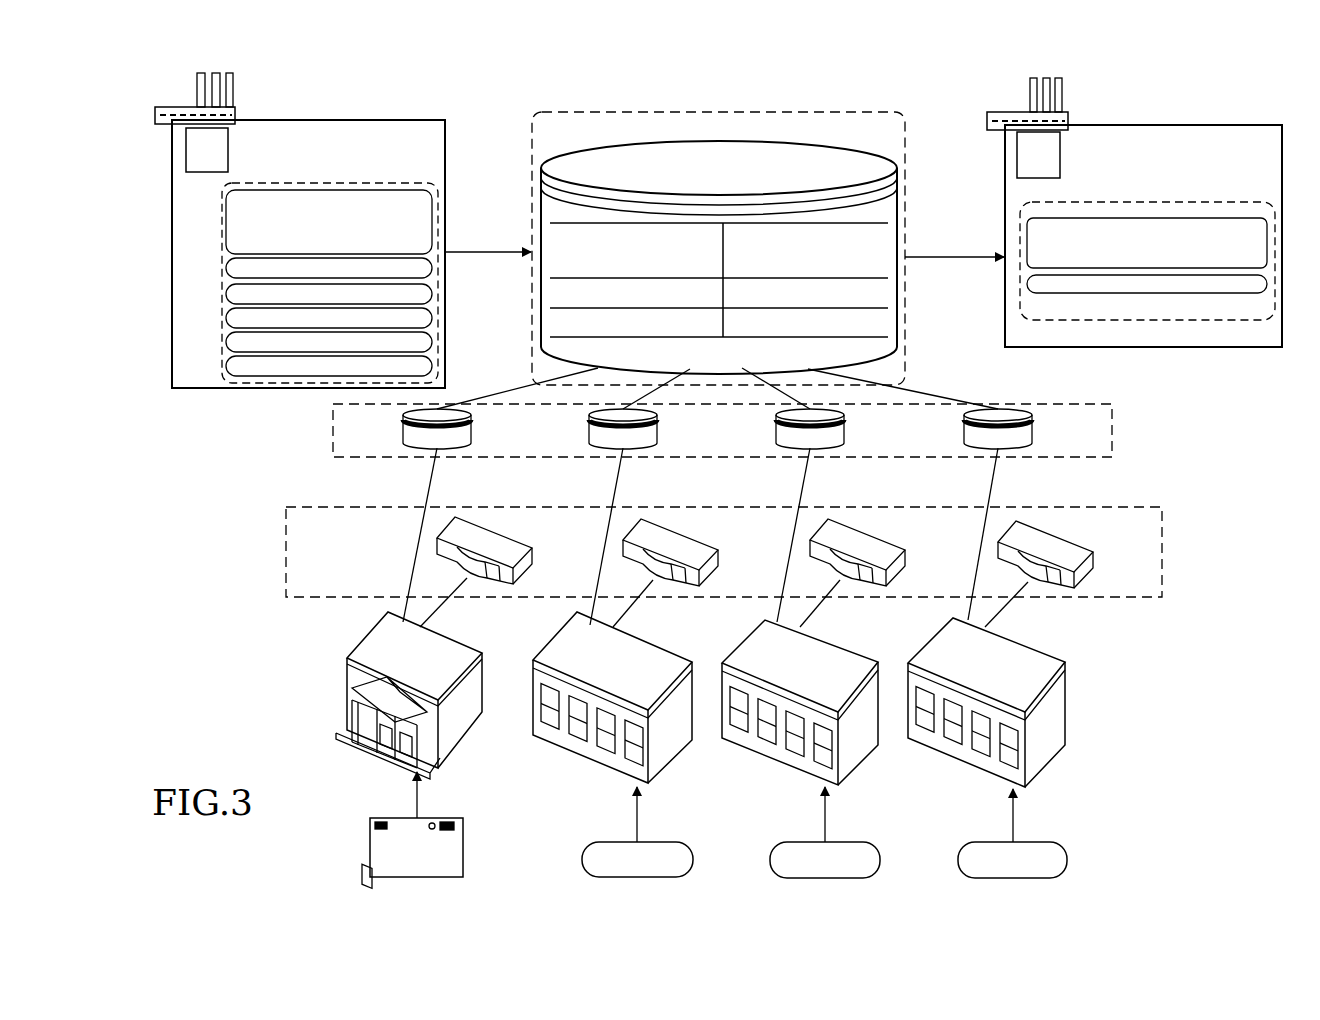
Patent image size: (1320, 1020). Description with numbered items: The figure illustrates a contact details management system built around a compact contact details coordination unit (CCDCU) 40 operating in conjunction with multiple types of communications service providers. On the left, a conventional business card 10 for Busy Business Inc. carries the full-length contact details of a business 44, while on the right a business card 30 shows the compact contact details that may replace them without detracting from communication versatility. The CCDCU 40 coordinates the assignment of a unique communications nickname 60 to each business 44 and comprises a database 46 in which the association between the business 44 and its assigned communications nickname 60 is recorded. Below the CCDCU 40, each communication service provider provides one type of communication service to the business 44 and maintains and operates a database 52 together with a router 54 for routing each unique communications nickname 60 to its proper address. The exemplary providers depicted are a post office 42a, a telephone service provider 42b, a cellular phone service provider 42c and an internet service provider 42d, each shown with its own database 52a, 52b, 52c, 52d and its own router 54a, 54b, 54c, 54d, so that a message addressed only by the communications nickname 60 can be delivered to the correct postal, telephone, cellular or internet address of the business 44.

The business card 10 is at (1155, 125).
The business card 30 is at (330, 120).
The compact contact details coordination unit (CCDCU) 40 is at (745, 229).
The business 44 is at (180, 107).
The database 46 is at (749, 257).
The communications nickname 60 is at (840, 300).
The database 52 is at (1112, 437).
The database 52a is at (472, 427).
The database 52b is at (658, 427).
The database 52c is at (845, 427).
The database 52d is at (1033, 427).
The router 54 is at (1162, 577).
The router 54a is at (511, 550).
The router 54b is at (697, 552).
The router 54c is at (883, 552).
The router 54d is at (1072, 554).
The post office 42a is at (455, 748).
The telephone service provider 42b is at (666, 768).
The cellular phone service provider 42c is at (855, 768).
The internet service provider 42d is at (1043, 768).